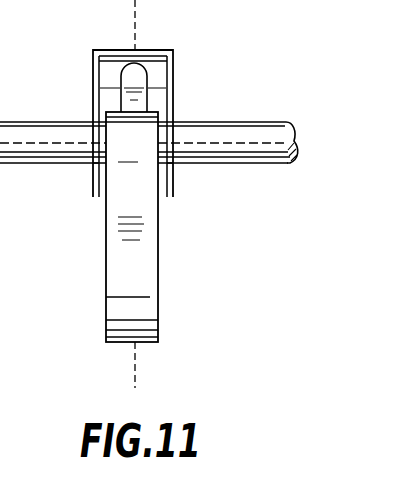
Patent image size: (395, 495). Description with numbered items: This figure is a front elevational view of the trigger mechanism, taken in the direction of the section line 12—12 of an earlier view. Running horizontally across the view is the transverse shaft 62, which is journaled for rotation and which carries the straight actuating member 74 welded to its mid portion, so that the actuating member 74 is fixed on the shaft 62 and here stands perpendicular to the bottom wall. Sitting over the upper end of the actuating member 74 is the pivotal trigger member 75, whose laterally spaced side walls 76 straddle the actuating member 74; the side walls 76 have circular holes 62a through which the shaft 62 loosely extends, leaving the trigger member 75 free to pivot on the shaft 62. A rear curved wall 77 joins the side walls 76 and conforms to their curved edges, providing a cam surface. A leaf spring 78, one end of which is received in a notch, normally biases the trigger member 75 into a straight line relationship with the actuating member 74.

The section line 12— 12 is at (135, 375).
The transverse shaft 62 is at (258, 133).
The circular holes 62a is at (93, 165).
The actuating member 74 is at (158, 277).
The pivotal trigger member 75 is at (178, 57).
The side walls 76 is at (93, 86).
The rear curved wall 77 is at (122, 49).
The leaf spring 78 is at (136, 72).